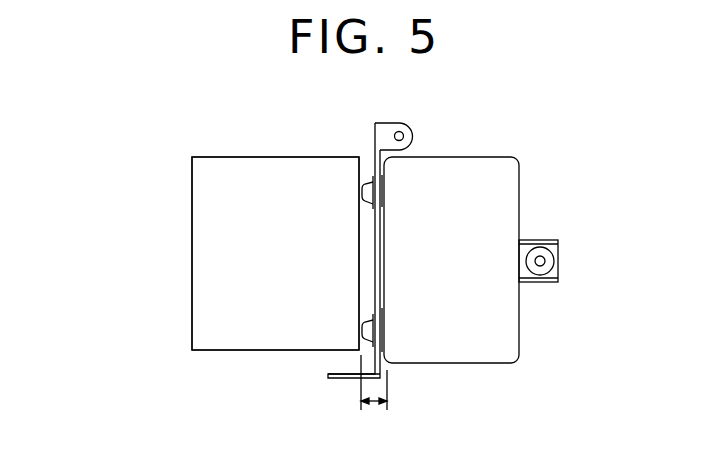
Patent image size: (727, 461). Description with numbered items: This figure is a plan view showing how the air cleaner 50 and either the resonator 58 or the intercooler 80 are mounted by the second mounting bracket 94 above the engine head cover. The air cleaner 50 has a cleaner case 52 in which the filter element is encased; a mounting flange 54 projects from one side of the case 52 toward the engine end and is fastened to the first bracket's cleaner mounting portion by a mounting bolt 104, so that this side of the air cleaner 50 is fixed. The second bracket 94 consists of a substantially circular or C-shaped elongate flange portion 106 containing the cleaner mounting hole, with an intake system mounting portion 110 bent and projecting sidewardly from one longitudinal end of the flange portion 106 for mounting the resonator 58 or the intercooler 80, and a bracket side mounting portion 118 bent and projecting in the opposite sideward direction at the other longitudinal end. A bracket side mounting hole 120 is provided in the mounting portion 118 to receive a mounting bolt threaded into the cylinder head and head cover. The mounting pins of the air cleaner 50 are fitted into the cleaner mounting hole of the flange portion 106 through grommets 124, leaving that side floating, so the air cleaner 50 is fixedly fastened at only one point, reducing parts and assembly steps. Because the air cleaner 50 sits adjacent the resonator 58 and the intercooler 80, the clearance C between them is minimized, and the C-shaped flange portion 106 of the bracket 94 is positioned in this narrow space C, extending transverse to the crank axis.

The air cleaner 50 is at (523, 132).
The cleaner case 52 is at (503, 192).
The mounting flange 54 is at (535, 279).
The resonator 58 is at (186, 283).
The intercooler 80 is at (275, 253).
The second mounting bracket 94 is at (432, 132).
The mounting bolt 104 is at (557, 248).
The flange portion 106 is at (375, 157).
The intake system mounting portion 110 is at (339, 379).
The bracket side mounting portion 118 is at (383, 125).
The bracket side mounting hole 120 is at (399, 131).
The grommets 124 is at (362, 193).
The clearance C is at (385, 404).